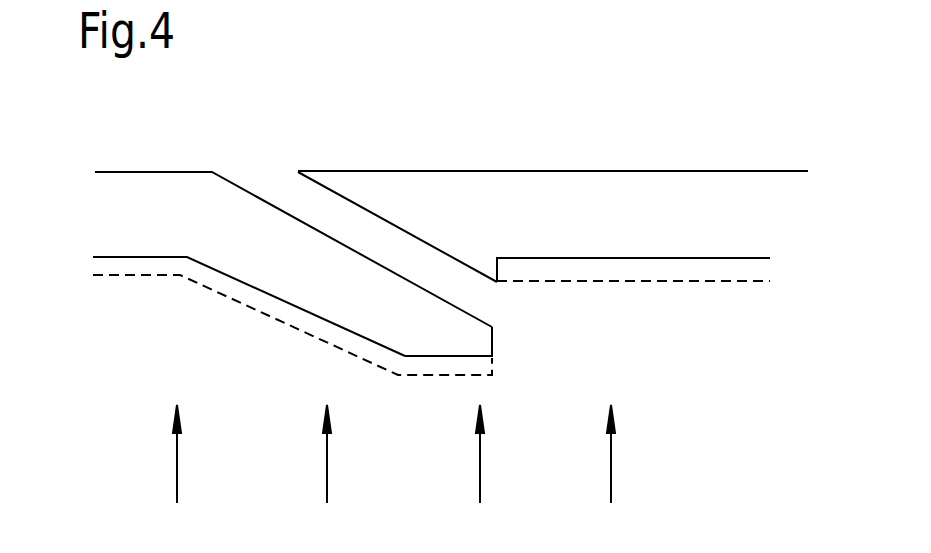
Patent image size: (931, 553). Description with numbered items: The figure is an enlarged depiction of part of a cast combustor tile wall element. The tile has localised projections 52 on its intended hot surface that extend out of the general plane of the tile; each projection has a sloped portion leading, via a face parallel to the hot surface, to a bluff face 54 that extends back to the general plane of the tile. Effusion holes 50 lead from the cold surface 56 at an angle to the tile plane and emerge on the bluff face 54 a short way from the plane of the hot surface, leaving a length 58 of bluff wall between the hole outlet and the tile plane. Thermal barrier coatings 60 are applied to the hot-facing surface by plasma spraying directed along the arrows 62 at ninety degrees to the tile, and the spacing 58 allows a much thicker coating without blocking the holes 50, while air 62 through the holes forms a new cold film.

The effusion holes 50 is at (358, 230).
The localised projections 52 is at (282, 272).
The bluff face 54 is at (492, 339).
The cold surface 56 is at (412, 171).
The length of bluff wall 58 is at (496, 280).
The thermal barrier coatings 60 is at (635, 272).
The air / arrows 62 is at (611, 481).